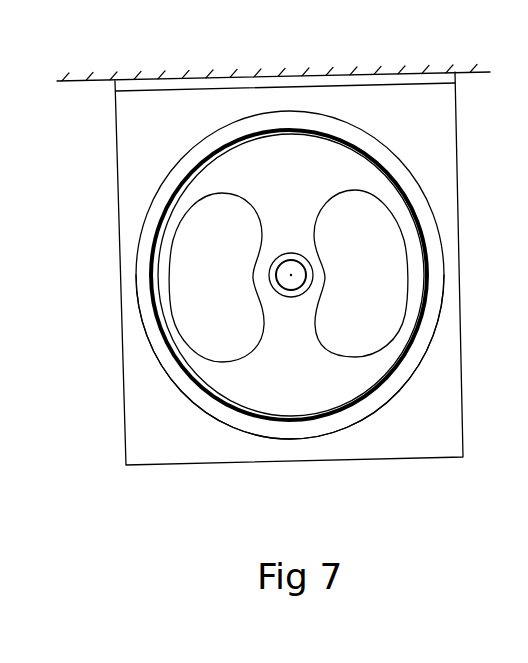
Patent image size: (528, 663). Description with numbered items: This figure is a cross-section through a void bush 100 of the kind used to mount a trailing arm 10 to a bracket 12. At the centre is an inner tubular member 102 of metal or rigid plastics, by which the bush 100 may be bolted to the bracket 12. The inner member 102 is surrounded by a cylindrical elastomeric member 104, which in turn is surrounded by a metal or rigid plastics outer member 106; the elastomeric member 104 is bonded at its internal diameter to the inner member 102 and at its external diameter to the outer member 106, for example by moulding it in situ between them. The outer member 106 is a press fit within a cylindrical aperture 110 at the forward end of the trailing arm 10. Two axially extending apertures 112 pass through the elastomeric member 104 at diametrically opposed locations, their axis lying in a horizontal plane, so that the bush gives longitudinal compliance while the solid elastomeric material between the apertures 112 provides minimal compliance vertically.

The trailing arm 10 is at (203, 87).
The bracket 12 is at (443, 160).
The void bush 100 is at (425, 433).
The inner tubular member 102 is at (272, 281).
The cylindrical elastomeric member 104 is at (285, 402).
The outer member 106 is at (425, 235).
The cylindrical aperture 110 is at (164, 222).
The axially extending apertures 112 is at (190, 275).